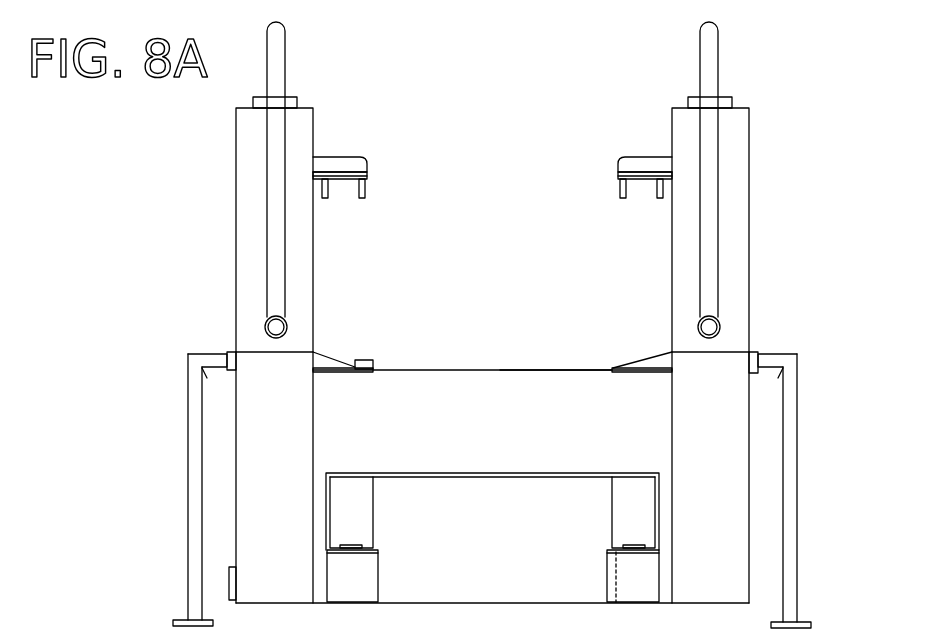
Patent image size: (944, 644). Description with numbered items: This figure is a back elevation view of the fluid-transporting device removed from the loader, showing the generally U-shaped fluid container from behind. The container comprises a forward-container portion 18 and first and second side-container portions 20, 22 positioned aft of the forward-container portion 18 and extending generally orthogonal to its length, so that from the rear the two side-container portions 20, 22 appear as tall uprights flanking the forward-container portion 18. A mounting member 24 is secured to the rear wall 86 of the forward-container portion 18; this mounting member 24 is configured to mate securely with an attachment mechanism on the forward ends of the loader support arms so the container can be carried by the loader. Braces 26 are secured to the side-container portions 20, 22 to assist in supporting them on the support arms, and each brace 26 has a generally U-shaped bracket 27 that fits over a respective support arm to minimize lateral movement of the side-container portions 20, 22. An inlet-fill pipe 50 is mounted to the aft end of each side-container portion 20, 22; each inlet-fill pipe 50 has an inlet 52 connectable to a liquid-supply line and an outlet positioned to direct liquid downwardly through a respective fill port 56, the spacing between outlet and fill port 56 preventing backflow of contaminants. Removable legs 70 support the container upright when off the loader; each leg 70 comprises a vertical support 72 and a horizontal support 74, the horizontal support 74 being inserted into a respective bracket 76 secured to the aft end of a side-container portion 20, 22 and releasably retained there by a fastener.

The forward-container portion 18 is at (447, 384).
The first side-container portion 20 is at (750, 212).
The second side-container portion 22 is at (315, 262).
The mounting member 24 is at (497, 474).
The brace 26 is at (340, 165).
The U-shaped bracket 27 is at (366, 186).
The inlet-fill pipe 50 is at (268, 232).
The inlet 52 is at (266, 322).
The fill port 56 is at (297, 101).
The leg 70 is at (192, 522).
The vertical support 72 is at (192, 446).
The horizontal support 74 is at (207, 353).
The bracket 76 is at (228, 352).
The rear wall 86 is at (558, 384).